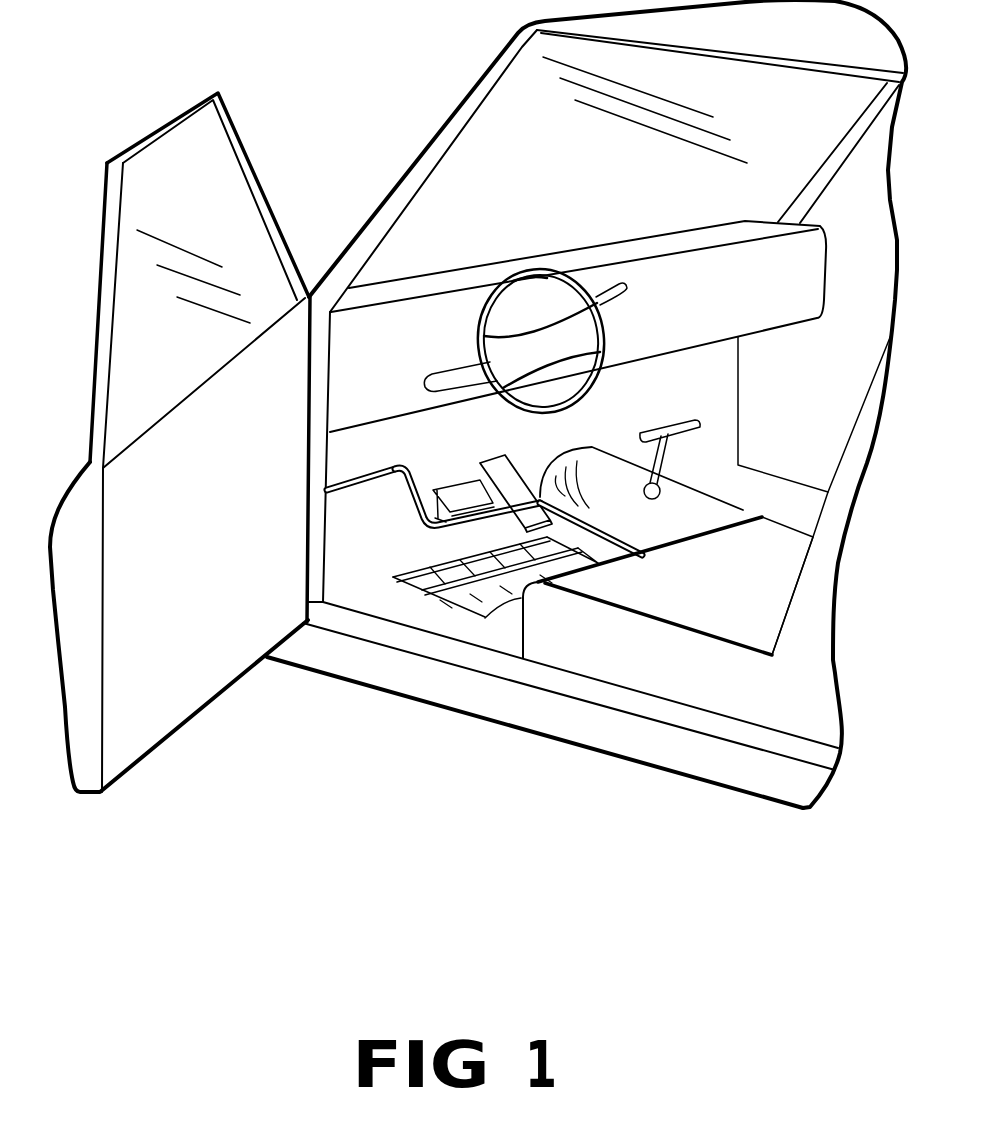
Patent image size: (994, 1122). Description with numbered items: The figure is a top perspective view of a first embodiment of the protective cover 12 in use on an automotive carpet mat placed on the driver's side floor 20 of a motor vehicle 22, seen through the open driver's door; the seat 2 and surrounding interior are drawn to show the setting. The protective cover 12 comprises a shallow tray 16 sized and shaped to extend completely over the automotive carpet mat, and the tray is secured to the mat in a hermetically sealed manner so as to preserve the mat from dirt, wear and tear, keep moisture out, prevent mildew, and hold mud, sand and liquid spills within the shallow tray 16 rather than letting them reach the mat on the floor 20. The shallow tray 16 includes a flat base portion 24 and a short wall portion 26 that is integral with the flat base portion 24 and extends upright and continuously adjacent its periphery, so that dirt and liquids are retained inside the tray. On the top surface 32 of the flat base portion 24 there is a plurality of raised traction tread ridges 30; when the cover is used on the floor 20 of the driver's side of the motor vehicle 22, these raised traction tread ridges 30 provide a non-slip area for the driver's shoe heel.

The vehicle seat 2 is at (639, 530).
The protective cover 12 is at (599, 502).
The shallow tray 16 is at (377, 452).
The floor 20 is at (705, 473).
The motor vehicle 22 is at (394, 158).
The flat base portion 24 is at (343, 547).
The short wall portion 26 is at (336, 470).
The raised traction tread ridges 30 is at (485, 616).
The top surface 32 is at (380, 590).